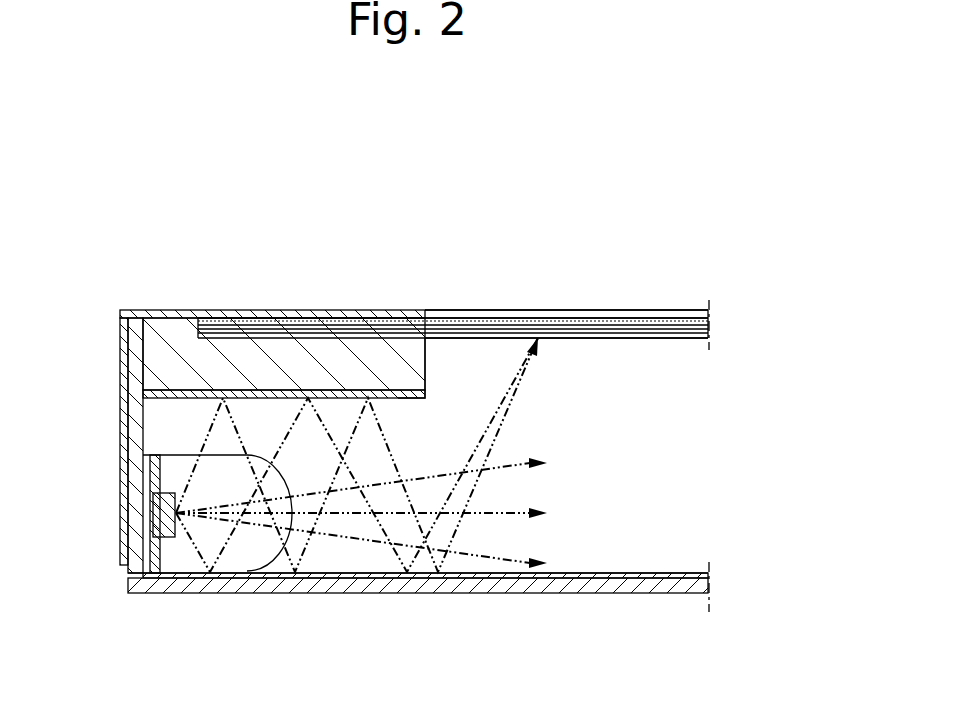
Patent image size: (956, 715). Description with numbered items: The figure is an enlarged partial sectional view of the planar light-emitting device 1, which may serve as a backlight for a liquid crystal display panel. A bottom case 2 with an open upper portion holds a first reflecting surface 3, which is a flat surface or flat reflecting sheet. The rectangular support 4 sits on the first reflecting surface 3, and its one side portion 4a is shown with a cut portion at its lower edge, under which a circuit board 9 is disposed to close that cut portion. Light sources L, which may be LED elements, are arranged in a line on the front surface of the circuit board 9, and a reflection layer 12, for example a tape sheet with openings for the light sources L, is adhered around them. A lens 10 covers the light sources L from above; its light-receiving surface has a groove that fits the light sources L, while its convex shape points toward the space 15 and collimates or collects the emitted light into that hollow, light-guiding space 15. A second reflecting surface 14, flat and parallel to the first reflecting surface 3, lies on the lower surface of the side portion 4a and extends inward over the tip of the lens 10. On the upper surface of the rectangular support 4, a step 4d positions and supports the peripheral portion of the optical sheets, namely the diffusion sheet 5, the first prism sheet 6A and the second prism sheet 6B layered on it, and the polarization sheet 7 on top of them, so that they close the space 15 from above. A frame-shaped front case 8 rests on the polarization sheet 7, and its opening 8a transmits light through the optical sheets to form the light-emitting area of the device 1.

The planar light-emitting device 1 is at (694, 203).
The bottom case 2 is at (668, 594).
The first reflecting surface 3 is at (668, 572).
The rectangular support 4 is at (280, 296).
The side portion 4a is at (357, 340).
The step 4d is at (213, 328).
The diffusion sheet 5 is at (620, 339).
The first prism sheet 6A is at (687, 339).
The second prism sheet 6B is at (675, 318).
The polarization sheet 7 is at (580, 313).
The front case 8 is at (275, 316).
The opening 8a is at (467, 313).
The circuit board 9 is at (152, 496).
The lens 10 is at (268, 562).
The reflection layer 12 is at (160, 468).
The second reflecting surface 14 is at (400, 400).
The space 15 is at (577, 563).
The light source L is at (180, 540).